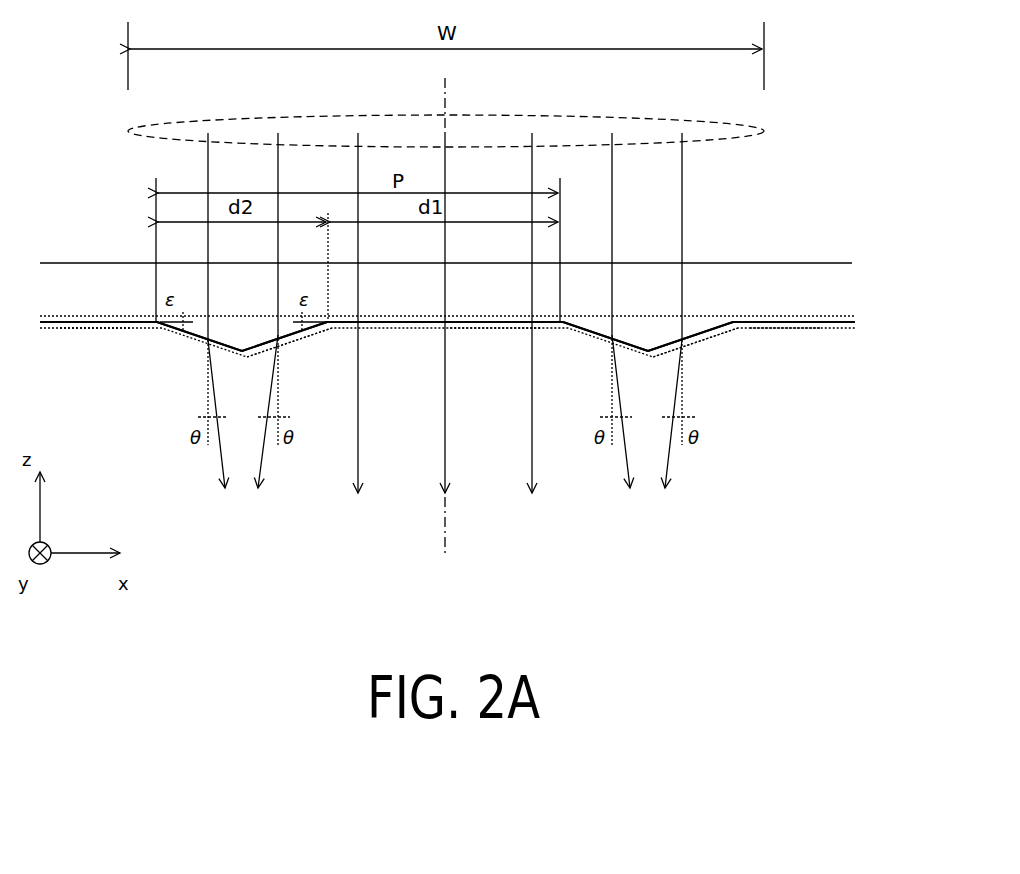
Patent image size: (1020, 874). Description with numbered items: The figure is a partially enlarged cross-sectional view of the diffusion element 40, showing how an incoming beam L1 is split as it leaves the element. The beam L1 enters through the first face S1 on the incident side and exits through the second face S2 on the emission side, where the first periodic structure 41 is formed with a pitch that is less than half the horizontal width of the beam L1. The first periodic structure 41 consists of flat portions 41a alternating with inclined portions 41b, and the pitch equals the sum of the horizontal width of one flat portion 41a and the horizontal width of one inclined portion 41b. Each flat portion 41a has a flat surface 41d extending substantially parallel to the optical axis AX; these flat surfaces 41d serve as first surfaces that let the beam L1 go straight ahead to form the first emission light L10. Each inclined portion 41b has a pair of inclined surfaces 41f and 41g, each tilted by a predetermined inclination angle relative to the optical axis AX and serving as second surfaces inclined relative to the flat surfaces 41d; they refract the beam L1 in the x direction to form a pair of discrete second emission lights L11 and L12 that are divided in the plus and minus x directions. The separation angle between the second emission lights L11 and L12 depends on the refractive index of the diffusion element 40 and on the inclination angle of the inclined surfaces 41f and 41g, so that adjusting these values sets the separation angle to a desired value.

The diffusion element 40 is at (780, 133).
The first periodic structure 41 is at (140, 430).
The flat portion 41a is at (97, 330).
The inclined portion 41b is at (300, 345).
The flat surface 41d is at (55, 330).
The inclined surface 41f is at (308, 332).
The inclined surface 41g is at (190, 340).
The first face S1 is at (758, 263).
The second face S2 is at (795, 328).
The beam L1 is at (610, 120).
The first emission light L10 is at (362, 447).
The second emission light L11 is at (265, 460).
The second emission light L12 is at (215, 460).
The optical axis AX is at (447, 538).